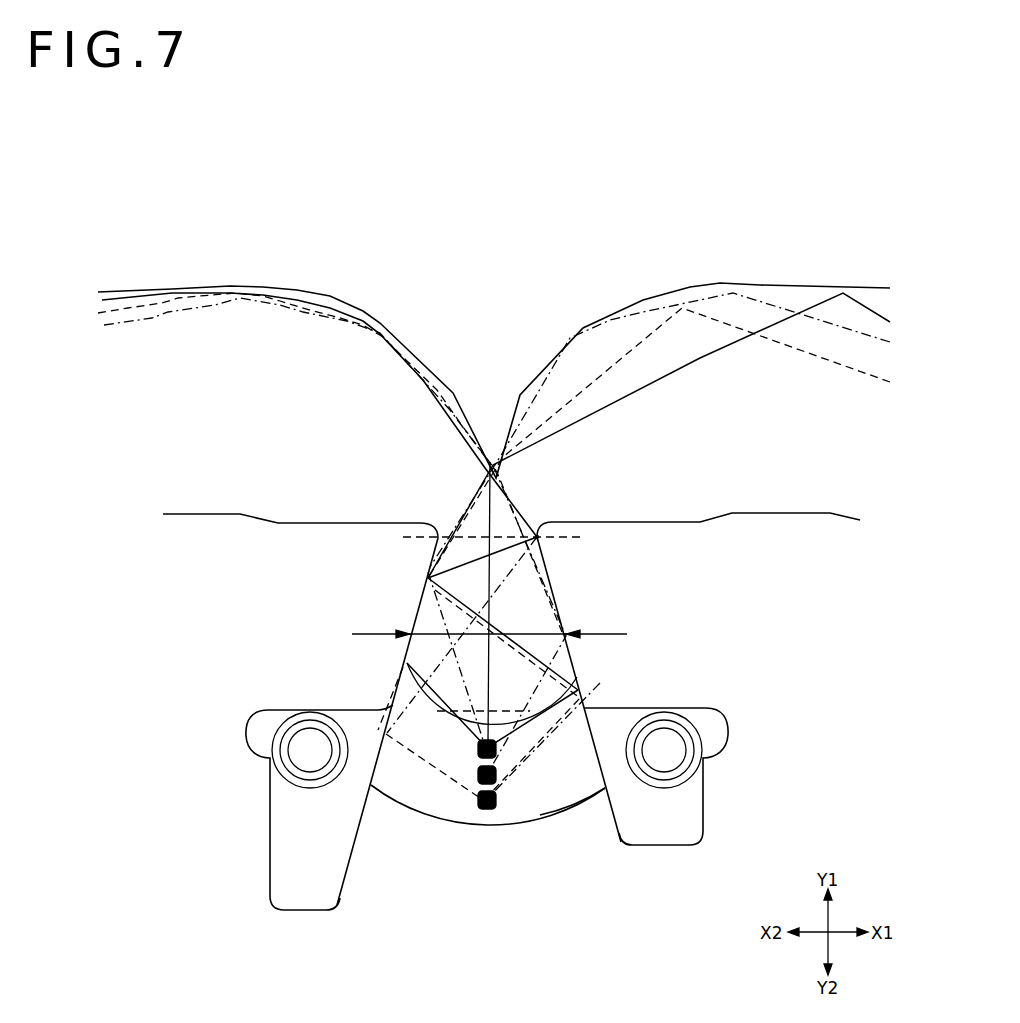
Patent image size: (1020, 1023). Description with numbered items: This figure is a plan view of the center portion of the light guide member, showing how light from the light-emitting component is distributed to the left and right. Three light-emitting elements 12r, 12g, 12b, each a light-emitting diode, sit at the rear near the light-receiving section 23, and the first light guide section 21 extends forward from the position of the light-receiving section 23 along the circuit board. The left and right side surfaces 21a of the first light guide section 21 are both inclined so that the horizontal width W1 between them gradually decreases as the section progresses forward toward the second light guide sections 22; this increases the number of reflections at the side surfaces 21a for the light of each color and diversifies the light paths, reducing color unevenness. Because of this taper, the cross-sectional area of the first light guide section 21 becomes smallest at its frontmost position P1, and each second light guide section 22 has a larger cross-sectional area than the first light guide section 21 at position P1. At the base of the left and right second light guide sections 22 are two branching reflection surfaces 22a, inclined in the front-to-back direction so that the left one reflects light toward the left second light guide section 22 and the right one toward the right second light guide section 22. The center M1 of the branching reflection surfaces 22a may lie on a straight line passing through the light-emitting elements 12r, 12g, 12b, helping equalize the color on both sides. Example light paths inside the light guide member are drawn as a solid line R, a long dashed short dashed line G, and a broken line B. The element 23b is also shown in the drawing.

The branching reflection surface 22a is at (418, 350).
The solid line R is at (333, 294).
The long dashed short dashed line G is at (140, 323).
The broken line B is at (175, 312).
The center of the branching reflection surfaces M1 is at (490, 470).
The position P1 is at (560, 551).
The second light guide section 22 is at (292, 497).
The side surface 21a is at (418, 602).
The first light guide section 21 is at (532, 601).
The horizontal width W1 is at (489, 624).
The light-emitting element 12r is at (478, 755).
The light-emitting element 12g is at (484, 784).
The light-emitting element 12b is at (488, 810).
The light-receiving section 23 is at (519, 838).
The curved surface of base 23b is at (563, 796).